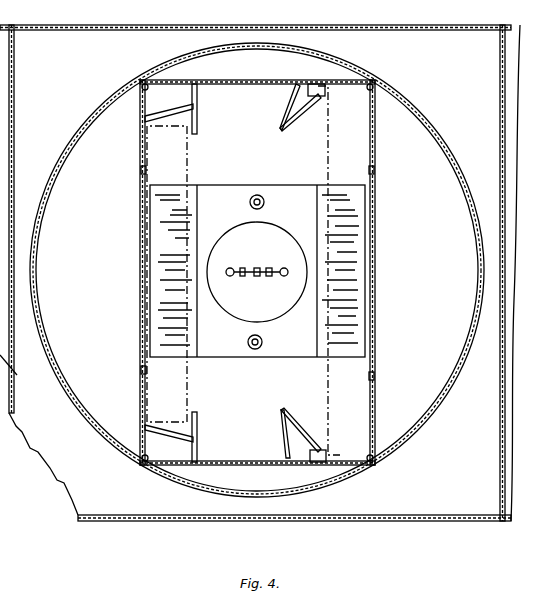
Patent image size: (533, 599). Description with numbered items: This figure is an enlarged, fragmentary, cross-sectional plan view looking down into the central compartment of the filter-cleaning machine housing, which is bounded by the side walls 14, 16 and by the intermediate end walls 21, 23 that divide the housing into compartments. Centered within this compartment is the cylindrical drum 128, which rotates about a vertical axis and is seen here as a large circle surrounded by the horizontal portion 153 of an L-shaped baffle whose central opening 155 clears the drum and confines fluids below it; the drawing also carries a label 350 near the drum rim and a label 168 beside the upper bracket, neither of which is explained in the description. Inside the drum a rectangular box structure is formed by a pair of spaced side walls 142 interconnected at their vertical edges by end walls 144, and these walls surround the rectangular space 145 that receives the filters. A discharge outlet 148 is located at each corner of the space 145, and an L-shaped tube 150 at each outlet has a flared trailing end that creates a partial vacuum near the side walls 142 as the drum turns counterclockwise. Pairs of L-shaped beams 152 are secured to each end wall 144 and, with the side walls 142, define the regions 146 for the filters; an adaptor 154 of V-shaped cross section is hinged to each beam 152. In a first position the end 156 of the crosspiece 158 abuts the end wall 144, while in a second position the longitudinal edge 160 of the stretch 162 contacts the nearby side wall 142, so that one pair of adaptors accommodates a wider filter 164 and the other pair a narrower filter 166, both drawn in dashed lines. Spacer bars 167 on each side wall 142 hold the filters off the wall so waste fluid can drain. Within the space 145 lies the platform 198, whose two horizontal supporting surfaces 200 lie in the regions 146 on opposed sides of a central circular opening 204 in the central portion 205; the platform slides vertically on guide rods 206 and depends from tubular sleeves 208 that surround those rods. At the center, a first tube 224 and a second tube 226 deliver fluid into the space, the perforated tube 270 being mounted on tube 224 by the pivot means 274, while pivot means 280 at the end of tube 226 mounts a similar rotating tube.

The side wall 14 is at (332, 26).
The side wall 16 is at (370, 521).
The intermediate end wall 21 is at (14, 404).
The intermediate end wall 23 is at (500, 430).
The cylindrical drum 128 is at (444, 142).
The side walls 142 is at (139, 303).
The end walls 144 is at (235, 85).
The rectangular space 145 is at (232, 379).
The regions 146 is at (140, 150).
The discharge outlet 148 is at (143, 82).
The L-shaped tube 150 is at (165, 80).
The L-shaped beam 152 is at (310, 84).
The horizontal portion 153 is at (440, 500).
The adaptor 154 is at (288, 430).
The central opening 155 is at (318, 490).
The end of crosspiece 156 is at (197, 106).
The crosspiece 158 is at (292, 464).
The longitudinal edge 160 is at (280, 408).
The stretch 162 is at (281, 411).
The filter 164 is at (376, 369).
The filter 166 is at (176, 165).
The spacer bar 167 is at (141, 172).
The upright post 168 is at (198, 128).
The platform 198 is at (305, 360).
The horizontal supporting surfaces 200 is at (162, 358).
The central circular opening 204 is at (292, 240).
The central portion 205 is at (274, 358).
The guide rod 206 is at (265, 201).
The tubular sleeve 208 is at (250, 204).
The first tube 224 is at (232, 267).
The second tube 226 is at (284, 277).
The perforated tube 270 is at (259, 278).
The pivot means 274 is at (242, 277).
The pivot means 280 is at (269, 267).
The ring segment 350 is at (395, 446).